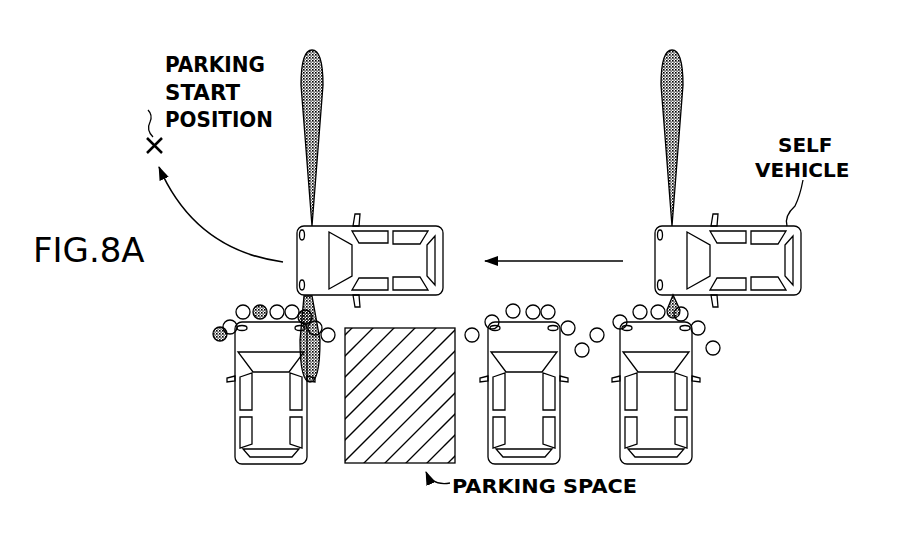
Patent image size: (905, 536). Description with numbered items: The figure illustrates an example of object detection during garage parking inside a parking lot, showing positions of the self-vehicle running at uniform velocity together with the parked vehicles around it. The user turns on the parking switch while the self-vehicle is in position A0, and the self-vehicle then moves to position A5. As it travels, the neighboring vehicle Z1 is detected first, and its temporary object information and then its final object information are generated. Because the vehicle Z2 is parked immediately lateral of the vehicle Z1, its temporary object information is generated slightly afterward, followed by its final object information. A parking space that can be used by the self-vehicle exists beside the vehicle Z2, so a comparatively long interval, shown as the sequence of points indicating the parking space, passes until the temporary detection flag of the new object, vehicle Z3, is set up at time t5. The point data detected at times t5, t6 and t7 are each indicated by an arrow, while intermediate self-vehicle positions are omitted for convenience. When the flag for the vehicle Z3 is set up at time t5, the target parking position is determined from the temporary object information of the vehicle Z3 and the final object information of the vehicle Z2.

The self-vehicle position at time t5 A5 is at (368, 227).
The self-vehicle position at time t0 A0 is at (735, 226).
The neighboring vehicle Z1 is at (690, 408).
The vehicle Z2 is at (558, 408).
The vehicle Z3 is at (236, 411).
The time t5 is at (304, 296).
The time t6 is at (260, 305).
The time t7 is at (219, 327).